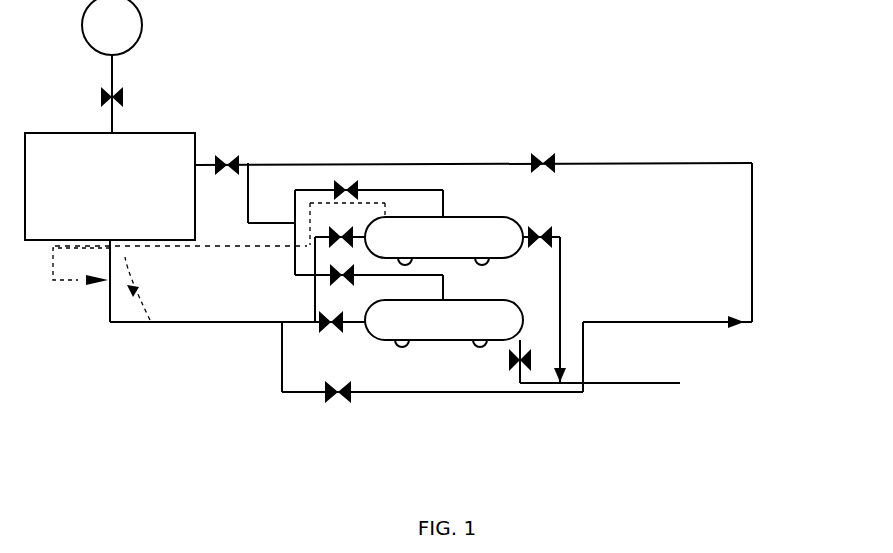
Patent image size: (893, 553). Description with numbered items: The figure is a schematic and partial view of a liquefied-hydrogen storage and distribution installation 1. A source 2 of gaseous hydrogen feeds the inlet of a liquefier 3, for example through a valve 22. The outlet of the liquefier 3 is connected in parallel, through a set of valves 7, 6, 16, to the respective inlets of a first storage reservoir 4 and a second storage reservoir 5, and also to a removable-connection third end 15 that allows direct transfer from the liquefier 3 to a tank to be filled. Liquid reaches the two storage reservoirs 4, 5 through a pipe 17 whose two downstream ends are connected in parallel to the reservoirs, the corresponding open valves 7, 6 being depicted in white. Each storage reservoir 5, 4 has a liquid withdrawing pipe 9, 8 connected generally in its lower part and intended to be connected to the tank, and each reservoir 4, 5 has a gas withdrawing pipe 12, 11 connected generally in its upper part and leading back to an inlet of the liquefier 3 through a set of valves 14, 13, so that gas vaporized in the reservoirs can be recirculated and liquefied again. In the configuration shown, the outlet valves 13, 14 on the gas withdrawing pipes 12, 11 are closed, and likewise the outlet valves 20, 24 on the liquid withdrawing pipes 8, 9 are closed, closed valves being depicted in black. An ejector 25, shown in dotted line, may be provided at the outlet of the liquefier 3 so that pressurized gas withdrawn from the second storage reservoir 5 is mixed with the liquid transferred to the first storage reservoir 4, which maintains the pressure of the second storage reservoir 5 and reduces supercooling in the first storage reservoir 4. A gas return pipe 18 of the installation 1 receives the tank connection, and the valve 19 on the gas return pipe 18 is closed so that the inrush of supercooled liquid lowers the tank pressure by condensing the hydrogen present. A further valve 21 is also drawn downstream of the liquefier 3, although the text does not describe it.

The installation 1 is at (718, 44).
The source of gaseous hydrogen 2 is at (103, 38).
The liquefier 3 is at (100, 198).
The first storage reservoir 4 is at (455, 332).
The second storage reservoir 5 is at (475, 228).
The valve 6 is at (330, 334).
The valve 7 is at (350, 219).
The liquid withdrawing pipe 8 is at (643, 390).
The liquid withdrawing pipe 9 is at (562, 283).
The gas withdrawing pipe 11 is at (434, 186).
The gas withdrawing pipe 12 is at (362, 283).
The outlet valve 13 is at (346, 176).
The outlet valve 14 is at (336, 288).
The removable-connection third end 15 is at (710, 308).
The valve 16 is at (333, 404).
The pipe 17 is at (108, 306).
The gas return pipe 18 is at (753, 210).
The valve 19 is at (549, 152).
The outlet valve 20 is at (503, 368).
The valve 21 is at (227, 165).
The valve 22 is at (127, 92).
The outlet valve 24 is at (549, 226).
The ejector 25 is at (152, 325).